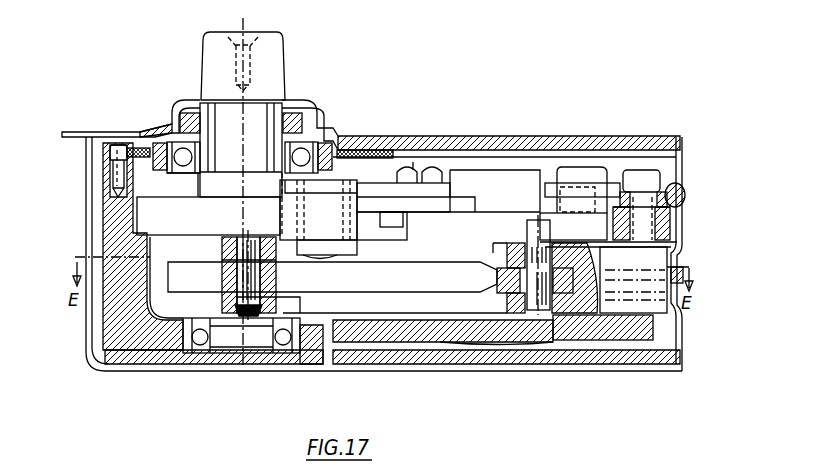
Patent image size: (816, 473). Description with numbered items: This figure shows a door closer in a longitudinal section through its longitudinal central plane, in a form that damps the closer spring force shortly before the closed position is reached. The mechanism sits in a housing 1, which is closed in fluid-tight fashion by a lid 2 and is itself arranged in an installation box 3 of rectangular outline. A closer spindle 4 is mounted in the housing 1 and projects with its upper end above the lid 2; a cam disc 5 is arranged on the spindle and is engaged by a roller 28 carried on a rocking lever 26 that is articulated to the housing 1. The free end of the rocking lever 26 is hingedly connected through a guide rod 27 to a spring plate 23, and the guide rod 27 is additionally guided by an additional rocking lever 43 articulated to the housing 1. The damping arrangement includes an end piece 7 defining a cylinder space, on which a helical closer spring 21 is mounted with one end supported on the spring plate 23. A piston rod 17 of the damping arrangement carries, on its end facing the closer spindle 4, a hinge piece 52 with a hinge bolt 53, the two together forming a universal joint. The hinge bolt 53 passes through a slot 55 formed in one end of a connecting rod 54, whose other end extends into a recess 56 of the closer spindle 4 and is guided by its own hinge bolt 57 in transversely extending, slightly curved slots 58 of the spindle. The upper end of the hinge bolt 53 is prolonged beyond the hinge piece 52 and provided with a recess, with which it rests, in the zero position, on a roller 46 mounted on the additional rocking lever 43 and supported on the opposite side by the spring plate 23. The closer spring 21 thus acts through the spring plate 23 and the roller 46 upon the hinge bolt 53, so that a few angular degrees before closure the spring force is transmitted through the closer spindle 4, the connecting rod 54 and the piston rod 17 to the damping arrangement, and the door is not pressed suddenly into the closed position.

The housing 1 is at (137, 347).
The lid 2 is at (354, 143).
The installation box 3 is at (158, 366).
The closer spindle 4 is at (261, 58).
The cam disc 5 is at (150, 212).
The end piece 7 is at (642, 320).
The piston rod 17 is at (670, 342).
The closer spring 21 is at (676, 184).
The spring plate 23 is at (565, 330).
The rocking lever 26 is at (373, 187).
The guide rod 27 is at (480, 180).
The roller 28 is at (308, 205).
The additional rocking lever 43 is at (593, 193).
The roller 46 is at (545, 222).
The hinge piece 52 is at (600, 292).
The hinge bolt 53 is at (535, 295).
The connecting rod 54 is at (410, 277).
The slot 55 is at (512, 267).
The recess 56 is at (203, 333).
The hinge bolt 57 is at (245, 292).
The slots 58 is at (270, 312).